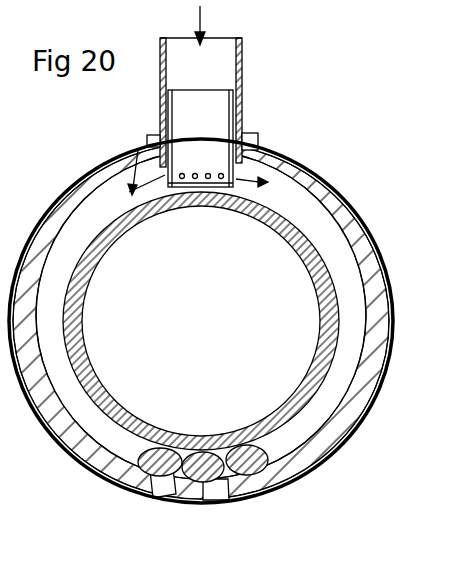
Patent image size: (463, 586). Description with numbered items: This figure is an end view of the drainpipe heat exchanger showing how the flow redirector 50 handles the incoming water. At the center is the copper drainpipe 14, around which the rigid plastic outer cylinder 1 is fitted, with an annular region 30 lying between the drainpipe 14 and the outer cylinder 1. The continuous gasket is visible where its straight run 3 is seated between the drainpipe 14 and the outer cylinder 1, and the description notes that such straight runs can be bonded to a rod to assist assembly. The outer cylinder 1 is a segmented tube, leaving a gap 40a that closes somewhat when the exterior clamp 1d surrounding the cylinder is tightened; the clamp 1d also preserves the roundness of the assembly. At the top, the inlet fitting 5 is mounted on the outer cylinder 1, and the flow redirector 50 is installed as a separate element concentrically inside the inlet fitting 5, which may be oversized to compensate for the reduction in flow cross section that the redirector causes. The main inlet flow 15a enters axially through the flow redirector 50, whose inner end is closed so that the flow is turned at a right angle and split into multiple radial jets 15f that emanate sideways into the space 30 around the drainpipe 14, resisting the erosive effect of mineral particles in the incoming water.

The outer cylinder 1 is at (333, 186).
The exterior clamp 1d is at (393, 293).
The gasket straight run 3 is at (258, 471).
The inlet fitting 5 is at (242, 78).
The central drainpipe 14 is at (84, 343).
The inlet flow 15a is at (220, 22).
The radial jets 15f is at (146, 143).
The annular space 30 is at (347, 358).
The gap 40a is at (203, 503).
The flow redirector 50 is at (183, 90).